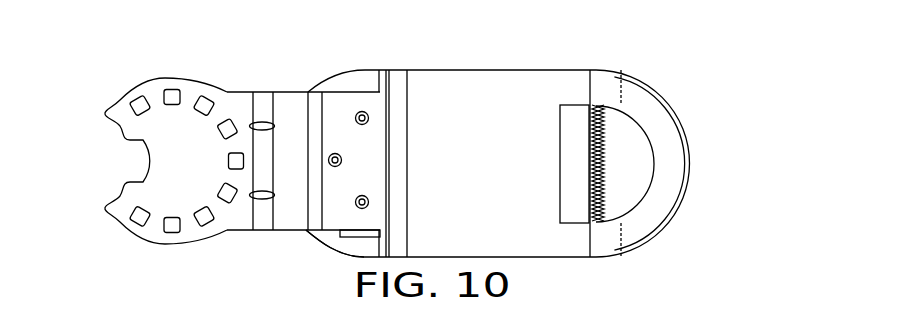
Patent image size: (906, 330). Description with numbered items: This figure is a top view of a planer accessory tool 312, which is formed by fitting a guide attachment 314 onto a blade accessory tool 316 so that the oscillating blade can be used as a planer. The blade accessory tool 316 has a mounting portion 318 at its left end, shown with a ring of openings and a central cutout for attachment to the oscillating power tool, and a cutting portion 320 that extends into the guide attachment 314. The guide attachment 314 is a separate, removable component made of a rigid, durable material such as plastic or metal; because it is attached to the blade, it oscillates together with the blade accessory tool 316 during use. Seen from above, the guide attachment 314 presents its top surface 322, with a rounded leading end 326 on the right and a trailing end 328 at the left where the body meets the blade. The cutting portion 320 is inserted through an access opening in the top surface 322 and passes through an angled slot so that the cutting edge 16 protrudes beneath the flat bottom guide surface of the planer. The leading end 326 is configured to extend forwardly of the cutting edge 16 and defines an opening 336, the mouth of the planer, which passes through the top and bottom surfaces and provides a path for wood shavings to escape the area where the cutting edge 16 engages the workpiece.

The planer accessory tool 312 is at (673, 52).
The guide attachment 314 is at (548, 70).
The blade accessory tool 316 is at (237, 92).
The mounting portion 318 is at (122, 110).
The cutting portion 320 is at (340, 113).
The top surface 322 is at (490, 100).
The leading end 326 is at (688, 133).
The trailing end 328 is at (303, 231).
The opening 336 is at (625, 195).
The cutting edge 16 is at (600, 164).